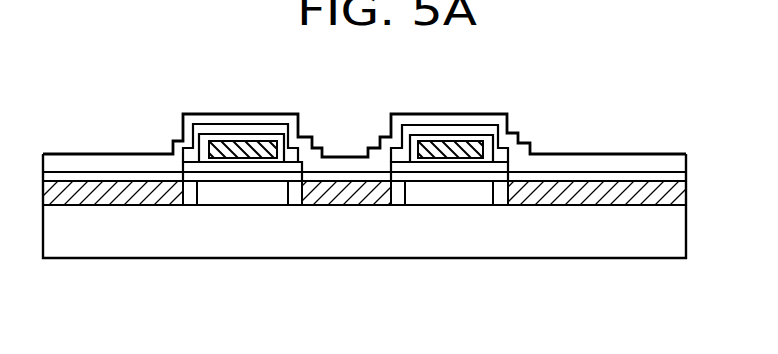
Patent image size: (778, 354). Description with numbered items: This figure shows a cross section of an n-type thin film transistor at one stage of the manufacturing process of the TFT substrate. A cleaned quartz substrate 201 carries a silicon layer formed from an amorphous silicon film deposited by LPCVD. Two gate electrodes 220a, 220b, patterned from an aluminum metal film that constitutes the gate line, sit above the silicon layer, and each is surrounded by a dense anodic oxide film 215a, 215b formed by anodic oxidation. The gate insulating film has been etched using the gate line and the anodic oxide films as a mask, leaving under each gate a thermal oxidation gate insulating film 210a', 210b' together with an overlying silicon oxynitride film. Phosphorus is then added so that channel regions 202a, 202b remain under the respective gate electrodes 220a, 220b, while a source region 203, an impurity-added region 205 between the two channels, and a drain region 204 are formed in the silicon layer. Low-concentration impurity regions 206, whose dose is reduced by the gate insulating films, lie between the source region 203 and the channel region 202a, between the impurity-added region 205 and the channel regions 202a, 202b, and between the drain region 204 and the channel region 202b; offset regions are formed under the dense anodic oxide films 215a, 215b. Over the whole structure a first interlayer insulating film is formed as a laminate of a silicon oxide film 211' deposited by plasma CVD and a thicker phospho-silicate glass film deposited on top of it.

The substrate 201 is at (655, 235).
The channel region 202a is at (242, 197).
The channel region 202b is at (441, 197).
The source region 203 is at (103, 198).
The drain region 204 is at (588, 205).
The impurity-added region 205 is at (347, 197).
The low-concentration impurity regions 206 is at (191, 196).
The gate insulating film 210a' is at (281, 140).
The gate insulating film 210b' is at (506, 149).
The silicon oxide film 211' is at (364, 148).
The dense anodic oxide film 215a is at (203, 142).
The dense anodic oxide film 215b is at (488, 140).
The gate electrode 220a is at (221, 145).
The gate electrode 220b is at (438, 148).